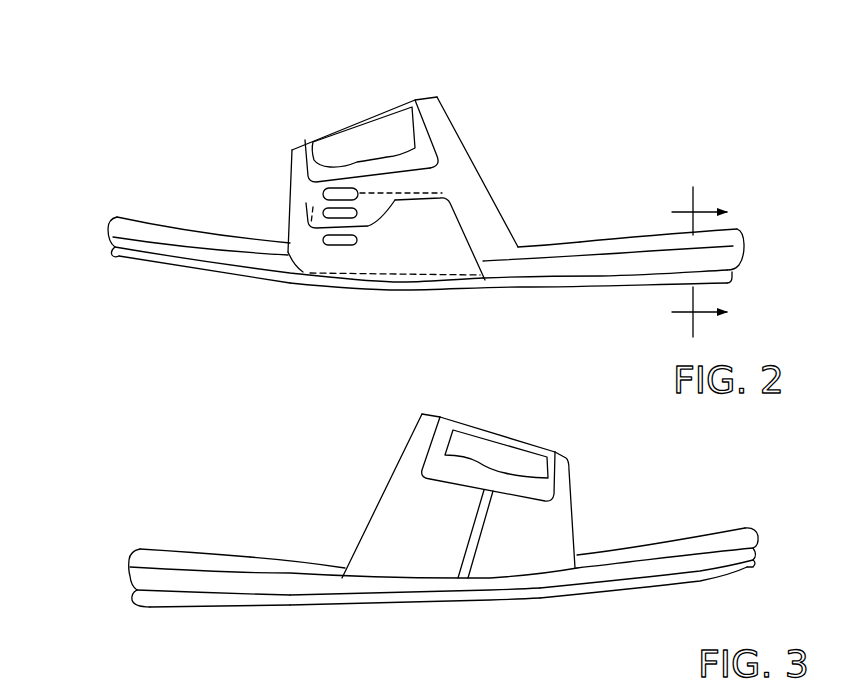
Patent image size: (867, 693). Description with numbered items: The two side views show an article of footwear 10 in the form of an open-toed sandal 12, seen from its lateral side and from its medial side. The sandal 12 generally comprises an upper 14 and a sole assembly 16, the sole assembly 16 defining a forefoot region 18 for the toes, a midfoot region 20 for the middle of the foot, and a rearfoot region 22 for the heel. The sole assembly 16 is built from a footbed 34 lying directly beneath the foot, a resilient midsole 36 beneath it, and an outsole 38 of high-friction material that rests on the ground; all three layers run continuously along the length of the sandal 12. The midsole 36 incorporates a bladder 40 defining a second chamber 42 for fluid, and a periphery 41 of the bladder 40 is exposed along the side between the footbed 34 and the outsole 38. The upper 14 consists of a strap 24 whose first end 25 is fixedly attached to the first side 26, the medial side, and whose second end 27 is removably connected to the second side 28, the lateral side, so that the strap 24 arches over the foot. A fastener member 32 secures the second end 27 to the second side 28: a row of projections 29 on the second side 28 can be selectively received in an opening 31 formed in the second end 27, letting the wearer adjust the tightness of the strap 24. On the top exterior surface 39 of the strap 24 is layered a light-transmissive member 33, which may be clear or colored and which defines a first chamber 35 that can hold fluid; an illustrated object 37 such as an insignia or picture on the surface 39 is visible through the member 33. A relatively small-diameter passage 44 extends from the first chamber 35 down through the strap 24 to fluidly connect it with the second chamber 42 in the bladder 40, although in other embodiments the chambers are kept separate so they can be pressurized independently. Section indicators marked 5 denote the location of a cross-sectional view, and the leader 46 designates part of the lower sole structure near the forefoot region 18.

In FIG. 2, the section line 5- 5 is at (696, 266).
In FIG. 2, the article of footwear 10 is at (545, 112).
In FIG. 3, the article of footwear 10 is at (305, 445).
In FIG. 2, the sandal 12 is at (157, 222).
In FIG. 3, the sandal 12 is at (702, 533).
In FIG. 2, the upper 14 is at (439, 96).
In FIG. 3, the upper 14 is at (416, 410).
In FIG. 2, the sole assembly 16 is at (248, 286).
In FIG. 3, the sole assembly 16 is at (612, 598).
In FIG. 2, the forefoot region 18 is at (180, 230).
In FIG. 3, the forefoot region 18 is at (678, 543).
In FIG. 2, the midfoot region 20 is at (532, 243).
In FIG. 3, the midfoot region 20 is at (296, 557).
In FIG. 2, the rearfoot region 22 is at (723, 234).
In FIG. 3, the rearfoot region 22 is at (134, 554).
In FIG. 2, the strap 24 is at (440, 117).
In FIG. 3, the strap 24 is at (417, 428).
In FIG. 3, the first end 25 is at (367, 560).
In FIG. 3, the first side 26 is at (367, 588).
In FIG. 2, the second end 27 is at (450, 178).
In FIG. 2, the second side 28 is at (492, 268).
In FIG. 2, the projection 29 is at (313, 211).
In FIG. 2, the opening 31 is at (357, 213).
In FIG. 2, the fastener member 32 is at (338, 247).
In FIG. 2, the light-transmissive member 33 is at (408, 97).
In FIG. 3, the light-transmissive member 33 is at (445, 412).
In FIG. 2, the footbed 34 is at (605, 238).
In FIG. 3, the footbed 34 is at (207, 553).
In FIG. 2, the first chamber 35 is at (330, 134).
In FIG. 3, the first chamber 35 is at (535, 441).
In FIG. 2, the midsole 36 is at (742, 251).
In FIG. 3, the midsole 36 is at (130, 578).
In FIG. 2, the illustrated object 37 is at (364, 157).
In FIG. 3, the illustrated object 37 is at (490, 470).
In FIG. 2, the outsole 38 is at (617, 290).
In FIG. 3, the outsole 38 is at (193, 607).
In FIG. 2, the top exterior surface 39 is at (432, 94).
In FIG. 3, the top exterior surface 39 is at (424, 412).
In FIG. 2, the bladder 40 is at (113, 239).
In FIG. 3, the bladder 40 is at (757, 548).
In FIG. 2, the periphery 41 is at (585, 272).
In FIG. 3, the periphery 41 is at (222, 590).
In FIG. 2, the second chamber 42 is at (148, 253).
In FIG. 3, the second chamber 42 is at (725, 578).
In FIG. 3, the passage 44 is at (482, 534).
In FIG. 2, the lower sole layer at toe 46 is at (192, 270).
In FIG. 3, the lower sole layer at toe 46 is at (670, 583).